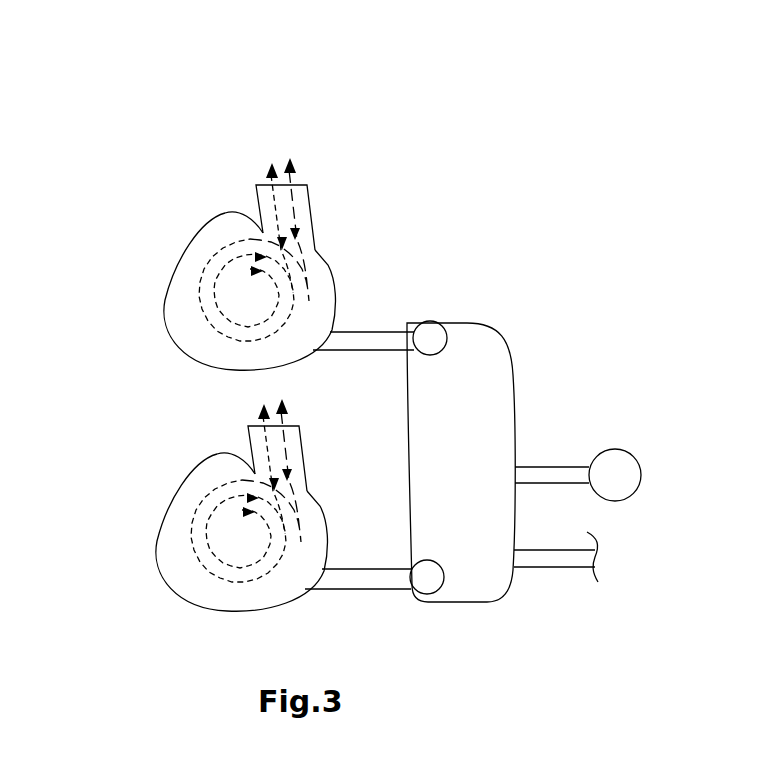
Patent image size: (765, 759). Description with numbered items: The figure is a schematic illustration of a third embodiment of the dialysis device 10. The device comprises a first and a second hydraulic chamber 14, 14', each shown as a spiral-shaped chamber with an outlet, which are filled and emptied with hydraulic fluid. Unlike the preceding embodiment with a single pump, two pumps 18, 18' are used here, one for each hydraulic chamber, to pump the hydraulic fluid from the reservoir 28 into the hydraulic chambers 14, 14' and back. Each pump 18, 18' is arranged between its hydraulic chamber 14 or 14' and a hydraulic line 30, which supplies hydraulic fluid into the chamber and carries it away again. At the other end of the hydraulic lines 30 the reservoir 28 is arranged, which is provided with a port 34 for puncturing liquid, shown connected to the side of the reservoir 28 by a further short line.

The dialysis device 10 is at (497, 150).
The first hydraulic chamber 14 is at (212, 274).
The second hydraulic chamber 14' is at (193, 505).
The pump 18 is at (446, 303).
The second pump 18' is at (450, 610).
The reservoir 28 is at (473, 378).
The hydraulic line 30 is at (357, 333).
The port 34 is at (615, 470).